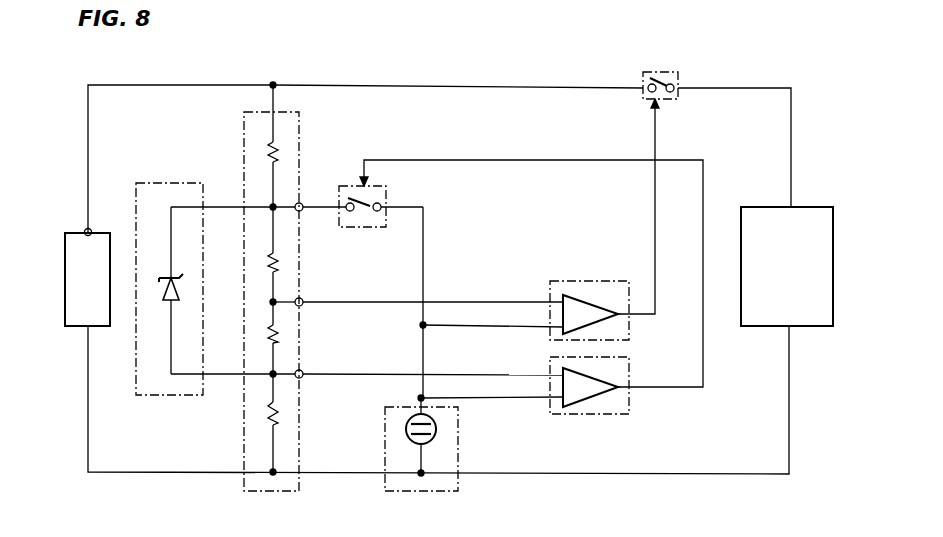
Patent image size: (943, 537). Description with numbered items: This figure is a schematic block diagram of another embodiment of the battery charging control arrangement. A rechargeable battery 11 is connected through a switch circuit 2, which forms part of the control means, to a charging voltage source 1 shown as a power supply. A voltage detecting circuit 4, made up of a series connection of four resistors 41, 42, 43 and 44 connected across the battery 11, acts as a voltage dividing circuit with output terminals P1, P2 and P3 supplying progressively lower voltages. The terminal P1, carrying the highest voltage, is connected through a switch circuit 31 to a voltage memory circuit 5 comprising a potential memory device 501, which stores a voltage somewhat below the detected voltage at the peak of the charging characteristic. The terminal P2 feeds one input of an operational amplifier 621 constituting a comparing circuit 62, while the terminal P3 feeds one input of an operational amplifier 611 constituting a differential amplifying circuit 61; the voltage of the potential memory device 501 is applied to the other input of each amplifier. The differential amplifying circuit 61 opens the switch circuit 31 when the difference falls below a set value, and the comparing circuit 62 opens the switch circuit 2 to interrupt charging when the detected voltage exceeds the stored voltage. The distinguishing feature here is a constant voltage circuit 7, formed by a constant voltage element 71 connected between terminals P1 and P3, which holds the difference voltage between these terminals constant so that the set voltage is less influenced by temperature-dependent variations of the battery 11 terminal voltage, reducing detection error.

The charging voltage source 1 is at (757, 207).
The switch circuit 2 is at (668, 72).
The voltage detecting circuit 4 is at (296, 288).
The resistor 41 is at (272, 162).
The resistor 42 is at (272, 272).
The resistor 43 is at (272, 343).
The resistor 44 is at (272, 425).
The voltage memory circuit 5 is at (424, 444).
The potential memory device 501 is at (405, 432).
The constant voltage circuit 7 is at (169, 267).
The constant voltage element 71 is at (170, 301).
The battery 11 is at (80, 332).
The switch circuit 31 is at (388, 189).
The differential amplifying circuit 61 is at (531, 305).
The operational amplifier 611 is at (587, 381).
The comparing circuit 62 is at (581, 219).
The operational amplifier 621 is at (587, 306).
The output terminal P1 is at (302, 205).
The output terminal P2 is at (302, 300).
The output terminal P3 is at (302, 372).